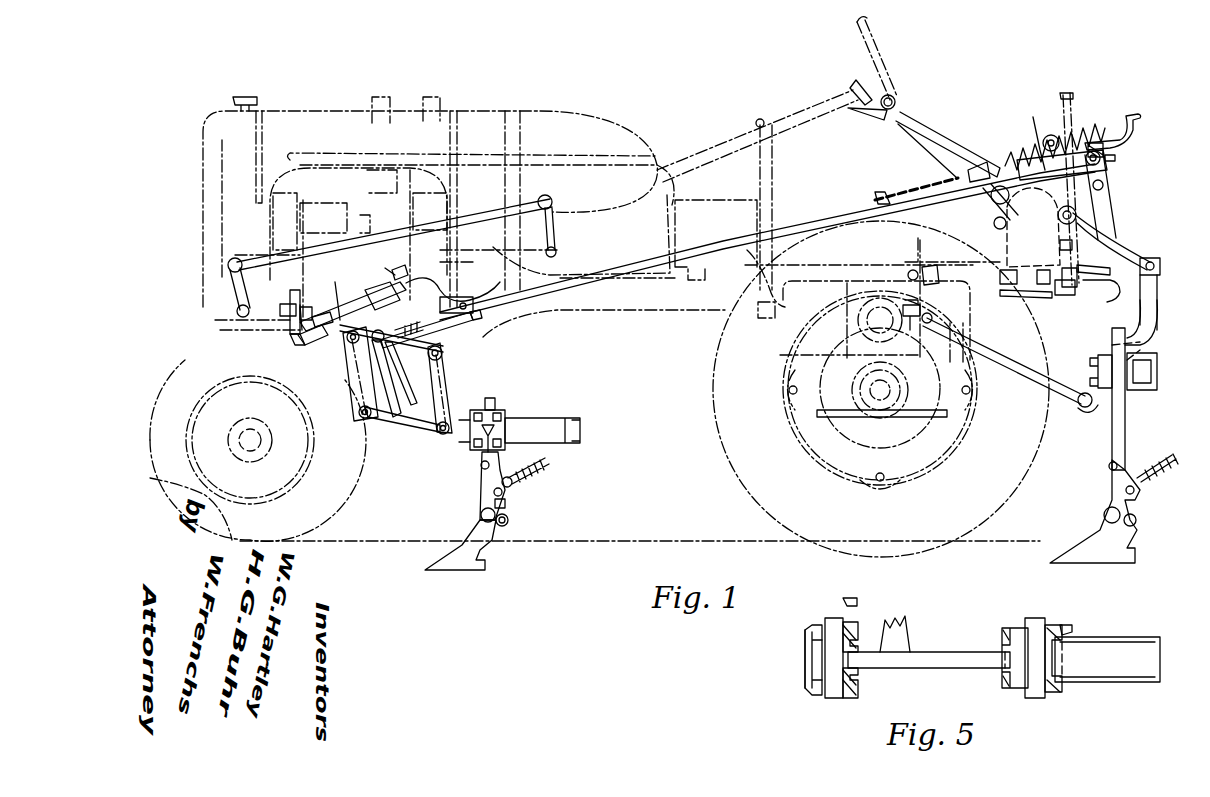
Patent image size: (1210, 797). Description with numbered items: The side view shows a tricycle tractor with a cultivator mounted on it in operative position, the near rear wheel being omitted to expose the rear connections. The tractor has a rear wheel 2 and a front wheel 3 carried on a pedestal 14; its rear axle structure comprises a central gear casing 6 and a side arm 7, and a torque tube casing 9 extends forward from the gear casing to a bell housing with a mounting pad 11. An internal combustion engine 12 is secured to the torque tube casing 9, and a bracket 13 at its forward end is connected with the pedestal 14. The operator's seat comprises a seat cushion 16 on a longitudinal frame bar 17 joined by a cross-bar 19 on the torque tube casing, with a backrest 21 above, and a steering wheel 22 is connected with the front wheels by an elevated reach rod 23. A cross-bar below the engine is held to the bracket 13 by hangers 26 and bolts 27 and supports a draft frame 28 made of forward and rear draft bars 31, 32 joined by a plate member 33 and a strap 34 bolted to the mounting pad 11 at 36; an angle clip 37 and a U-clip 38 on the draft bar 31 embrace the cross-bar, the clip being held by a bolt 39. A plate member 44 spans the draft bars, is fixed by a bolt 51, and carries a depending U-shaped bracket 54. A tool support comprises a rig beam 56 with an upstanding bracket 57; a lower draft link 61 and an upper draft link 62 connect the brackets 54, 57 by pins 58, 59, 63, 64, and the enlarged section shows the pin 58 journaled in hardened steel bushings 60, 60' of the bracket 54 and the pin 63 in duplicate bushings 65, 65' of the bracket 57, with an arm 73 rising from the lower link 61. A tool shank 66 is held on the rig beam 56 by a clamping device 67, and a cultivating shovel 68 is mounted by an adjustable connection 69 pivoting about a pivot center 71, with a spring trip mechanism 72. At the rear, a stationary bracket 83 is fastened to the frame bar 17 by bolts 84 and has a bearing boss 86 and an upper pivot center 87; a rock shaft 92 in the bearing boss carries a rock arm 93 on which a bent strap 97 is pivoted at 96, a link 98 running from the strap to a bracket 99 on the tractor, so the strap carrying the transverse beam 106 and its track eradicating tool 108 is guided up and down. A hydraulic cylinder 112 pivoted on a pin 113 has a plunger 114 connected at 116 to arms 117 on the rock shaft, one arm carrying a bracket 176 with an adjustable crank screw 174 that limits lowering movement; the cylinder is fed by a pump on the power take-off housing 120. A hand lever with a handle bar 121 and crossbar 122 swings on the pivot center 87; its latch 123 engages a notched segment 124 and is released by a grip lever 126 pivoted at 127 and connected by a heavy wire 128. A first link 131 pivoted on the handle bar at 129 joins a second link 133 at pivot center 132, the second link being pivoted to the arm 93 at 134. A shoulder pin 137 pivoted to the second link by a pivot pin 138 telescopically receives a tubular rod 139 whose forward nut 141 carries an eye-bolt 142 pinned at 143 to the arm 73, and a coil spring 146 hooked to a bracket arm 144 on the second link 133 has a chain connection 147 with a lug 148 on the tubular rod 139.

In FIG. 1, the rear wheel 2 is at (752, 485).
In FIG. 1, the front wheel 3 is at (185, 372).
In FIG. 1, the central gear casing 6 is at (778, 342).
In FIG. 1, the side arm 7 is at (830, 410).
In FIG. 1, the torque tube casing 9 is at (695, 310).
In FIG. 1, the mounting pad 11 is at (476, 273).
In FIG. 1, the internal combustion engine 12 is at (352, 196).
In FIG. 1, the bracket 13 is at (290, 296).
In FIG. 1, the pedestal 14 is at (228, 355).
In FIG. 1, the seat cushion 16 is at (935, 223).
In FIG. 1, the longitudinal frame bar 17 is at (838, 284).
In FIG. 1, the cross-bar 19 is at (764, 318).
In FIG. 1, the backrest 21 is at (1068, 94).
In FIG. 1, the steering wheel 22 is at (877, 52).
In FIG. 1, the reach rod 23 is at (490, 211).
In FIG. 1, the hanger 26 is at (304, 300).
In FIG. 1, the bolt 27 is at (280, 310).
In FIG. 1, the draft frame 28 is at (376, 310).
In FIG. 1, the forward draft bar 31 is at (328, 318).
In FIG. 1, the rear draft bar 32 is at (395, 262).
In FIG. 1, the plate member 33 is at (380, 292).
In FIG. 1, the strap 34 is at (440, 297).
In FIG. 1, the bolted connection 36 is at (470, 298).
In FIG. 1, the angle clip 37 is at (295, 345).
In FIG. 1, the U-clip 38 is at (312, 345).
In FIG. 1, the bolt 39 is at (312, 318).
In FIG. 1, the plate member 44 is at (342, 290).
In FIG. 1, the bolt 51 is at (390, 272).
In FIG. 1, the bracket 54 is at (352, 378).
In FIG. 5, the bracket 54 is at (806, 660).
In FIG. 1, the rig beam 56 is at (560, 430).
In FIG. 5, the rig beam 56 is at (1128, 632).
In FIG. 1, the bracket 57 is at (445, 390).
In FIG. 5, the bracket 57 is at (1006, 632).
In FIG. 1, the pin 58 is at (366, 420).
In FIG. 5, the pin 58 is at (832, 618).
In FIG. 1, the pivot pin 59 is at (348, 345).
In FIG. 5, the bushing 60 is at (828, 672).
In FIG. 5, the bushing 60' is at (863, 603).
In FIG. 1, the lower draft link 61 is at (412, 430).
In FIG. 5, the lower draft link 61 is at (944, 662).
In FIG. 1, the upper draft link 62 is at (392, 372).
In FIG. 1, the pin 63 is at (446, 440).
In FIG. 5, the pin 63 is at (1030, 618).
In FIG. 1, the pivot pin 64 is at (442, 358).
In FIG. 5, the bushing 65 is at (1066, 673).
In FIG. 5, the bushing 65' is at (1074, 614).
In FIG. 1, the tool shank 66 is at (490, 402).
In FIG. 1, the clamping device 67 is at (504, 418).
In FIG. 1, the cultivating shovel 68 is at (455, 566).
In FIG. 1, the adjustable connection 69 is at (508, 522).
In FIG. 1, the pivot center 71 is at (480, 516).
In FIG. 1, the spring trip mechanism 72 is at (510, 488).
In FIG. 1, the arm 73 is at (400, 398).
In FIG. 5, the arm 73 is at (910, 630).
In FIG. 1, the stationary bracket 83 is at (1045, 286).
In FIG. 1, the bolt 84 is at (1065, 296).
In FIG. 1, the bearing boss 86 is at (1112, 205).
In FIG. 1, the pivot center 87 is at (1050, 136).
In FIG. 1, the rock shaft 92 is at (1078, 215).
In FIG. 1, the rock arm 93 is at (1160, 268).
In FIG. 1, the pivot 96 is at (1157, 292).
In FIG. 1, the bent strap 97 is at (1157, 313).
In FIG. 1, the link 98 is at (1018, 362).
In FIG. 1, the bracket 99 is at (928, 312).
In FIG. 1, the transverse beam 106 is at (1157, 372).
In FIG. 1, the track eradicating tool 108 is at (1062, 555).
In FIG. 1, the hydraulic cylinder 112 is at (945, 268).
In FIG. 1, the pin 113 is at (912, 272).
In FIG. 1, the plunger 114 is at (1030, 300).
In FIG. 1, the pivotal connection 116 is at (1040, 228).
In FIG. 1, the arm 117 is at (1072, 246).
In FIG. 1, the power take-off housing 120 is at (948, 357).
In FIG. 1, the handle bar 121 is at (858, 90).
In FIG. 1, the crossbar 122 is at (1033, 117).
In FIG. 1, the latch 123 is at (995, 226).
In FIG. 1, the notched segment 124 is at (985, 208).
In FIG. 1, the grip lever 126 is at (866, 112).
In FIG. 1, the pivot 127 is at (896, 102).
In FIG. 1, the heavy wire 128 is at (928, 148).
In FIG. 1, the pivot center 129 is at (1012, 158).
In FIG. 1, the first link 131 is at (1106, 194).
In FIG. 1, the pivot center 132 is at (1104, 185).
In FIG. 1, the second link 133 is at (1118, 244).
In FIG. 1, the pivot center 134 is at (1104, 275).
In FIG. 1, the shoulder pin 137 is at (1090, 143).
In FIG. 1, the pivot pin 138 is at (1096, 150).
In FIG. 1, the tubular rod 139 is at (735, 250).
In FIG. 1, the nut 141 is at (455, 323).
In FIG. 1, the eye-bolt 142 is at (398, 338).
In FIG. 1, the pivot pin 143 is at (420, 350).
In FIG. 1, the bracket arm 144 is at (1135, 140).
In FIG. 1, the coil spring 146 is at (988, 162).
In FIG. 1, the chain connection 147 is at (925, 190).
In FIG. 1, the lug 148 is at (880, 196).
In FIG. 1, the crank screw 174 is at (1115, 312).
In FIG. 1, the bracket 176 is at (1078, 268).